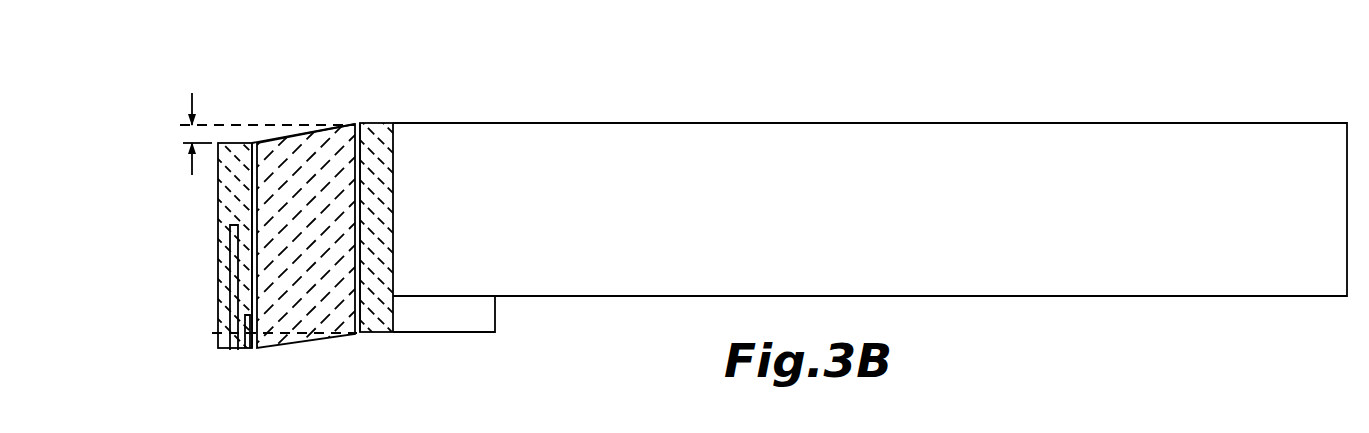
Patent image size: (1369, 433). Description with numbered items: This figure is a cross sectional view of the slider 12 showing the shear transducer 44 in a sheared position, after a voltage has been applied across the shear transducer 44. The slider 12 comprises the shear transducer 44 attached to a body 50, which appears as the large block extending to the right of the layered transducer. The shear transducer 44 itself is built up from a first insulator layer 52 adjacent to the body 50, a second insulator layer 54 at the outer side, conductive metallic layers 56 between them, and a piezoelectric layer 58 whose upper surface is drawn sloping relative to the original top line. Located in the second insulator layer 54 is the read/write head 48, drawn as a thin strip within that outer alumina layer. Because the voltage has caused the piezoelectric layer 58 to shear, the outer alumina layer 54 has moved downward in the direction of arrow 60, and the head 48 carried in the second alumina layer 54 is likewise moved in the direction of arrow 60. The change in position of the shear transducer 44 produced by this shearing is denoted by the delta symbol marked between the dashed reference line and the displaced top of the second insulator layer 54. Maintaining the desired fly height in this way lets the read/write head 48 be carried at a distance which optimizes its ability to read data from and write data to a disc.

The slider 12 is at (942, 88).
The shear transducer 44 is at (320, 87).
The read/write head 48 is at (237, 350).
The body 50 is at (947, 220).
The first insulator layer 52 is at (380, 333).
The second insulator layer 54 is at (220, 290).
The conductive metallic layers 56 is at (358, 350).
The piezoelectric layer 58 is at (322, 126).
The arrow 60 is at (162, 235).